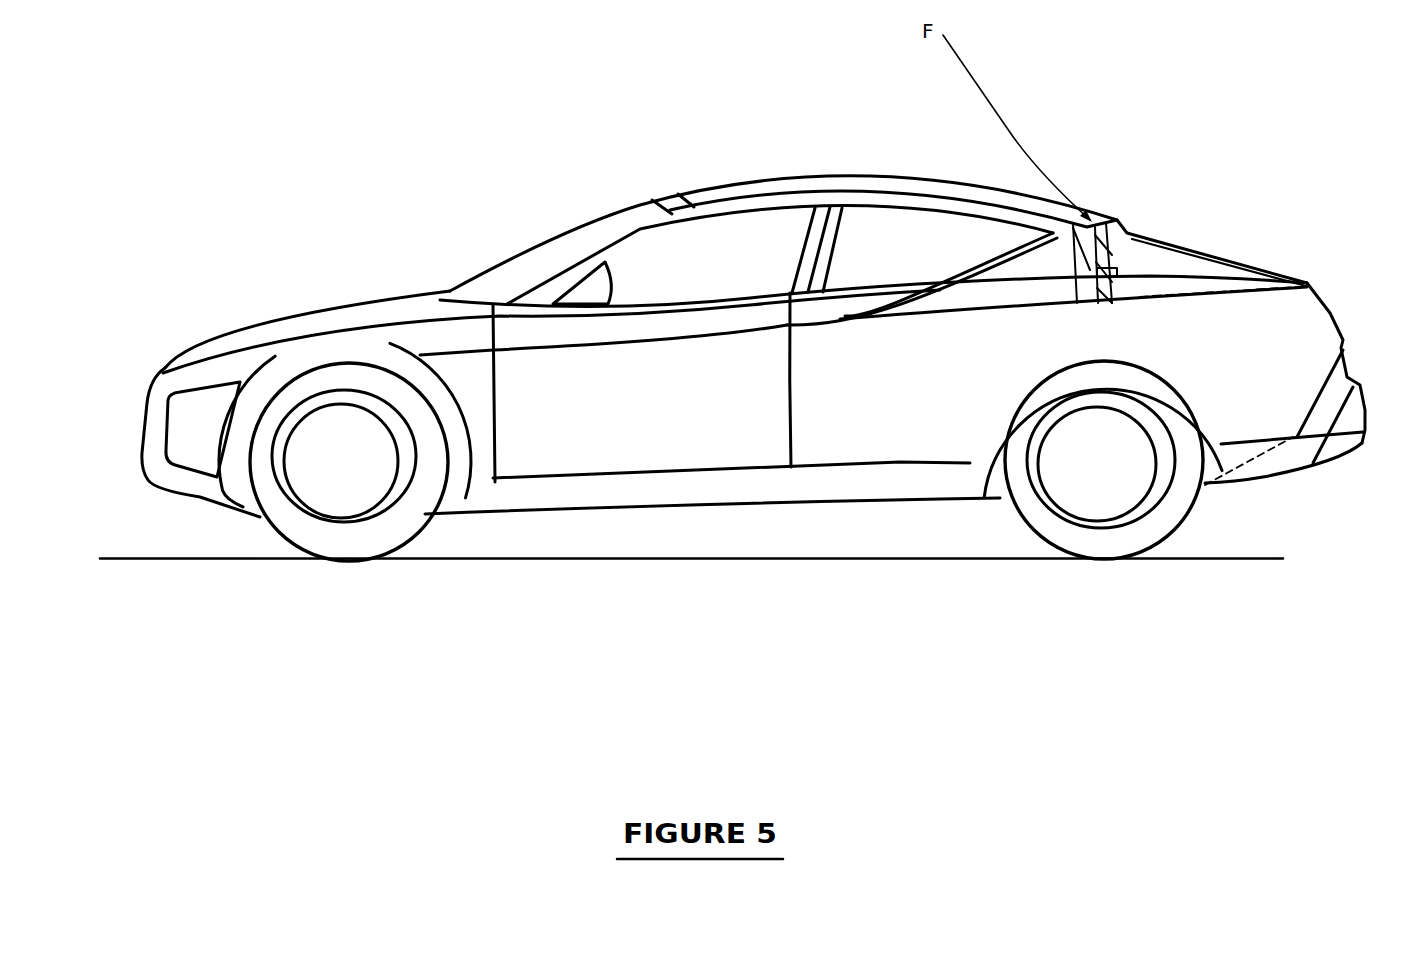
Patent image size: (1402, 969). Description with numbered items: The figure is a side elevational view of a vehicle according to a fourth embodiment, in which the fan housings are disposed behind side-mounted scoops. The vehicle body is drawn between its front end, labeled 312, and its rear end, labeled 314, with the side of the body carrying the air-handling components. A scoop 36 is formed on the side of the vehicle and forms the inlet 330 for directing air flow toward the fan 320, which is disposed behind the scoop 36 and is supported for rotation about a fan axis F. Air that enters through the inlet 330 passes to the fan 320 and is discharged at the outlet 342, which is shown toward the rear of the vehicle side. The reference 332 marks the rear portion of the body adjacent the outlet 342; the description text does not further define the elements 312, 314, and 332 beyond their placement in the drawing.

The front end of vehicle 312 is at (127, 487).
The rear end of vehicle 314 is at (1363, 444).
The inlet 330 is at (965, 280).
The scoop 36 is at (973, 275).
The fan 320 is at (1080, 333).
The outlet 342 is at (1133, 268).
The rear deck 332 is at (1303, 332).